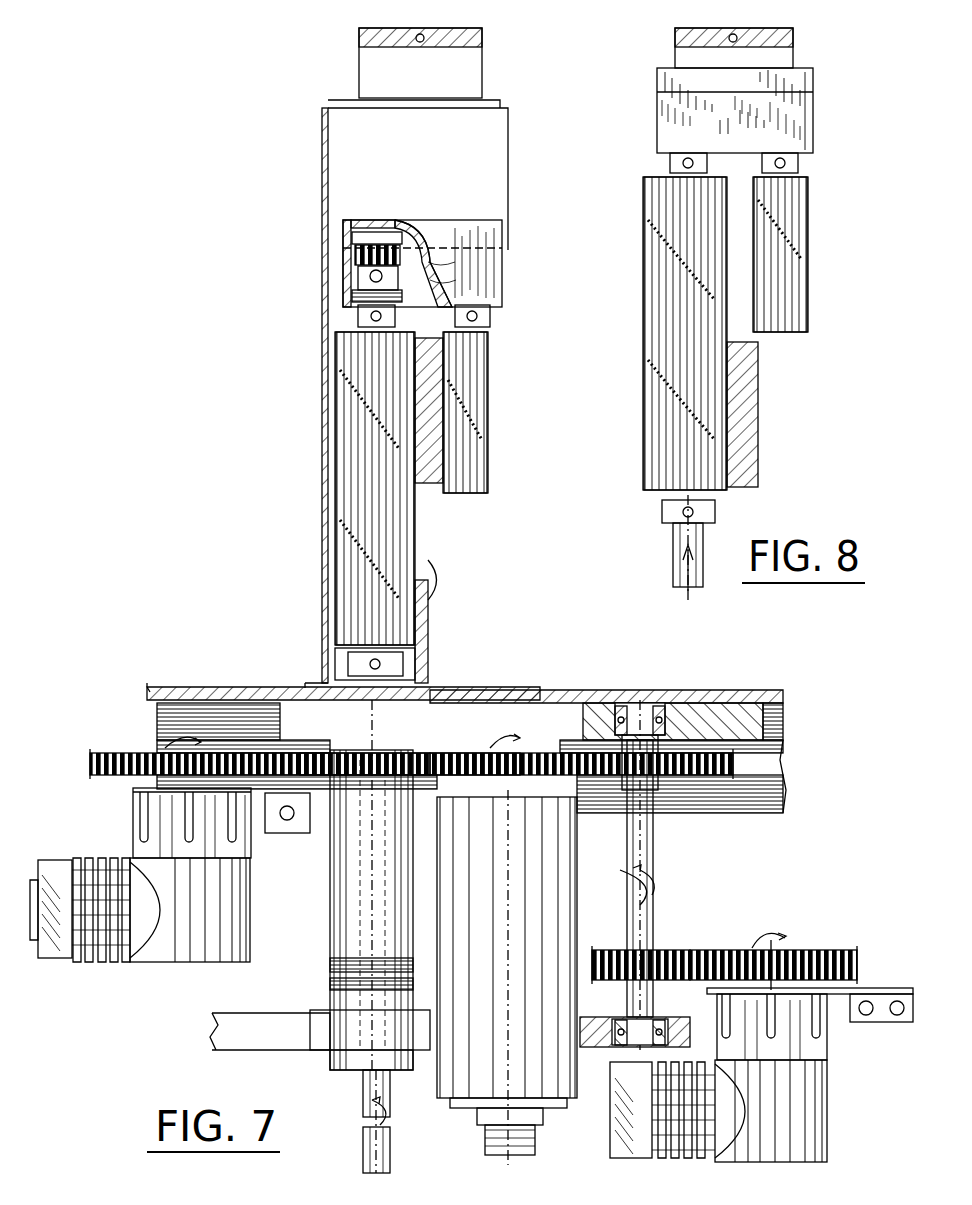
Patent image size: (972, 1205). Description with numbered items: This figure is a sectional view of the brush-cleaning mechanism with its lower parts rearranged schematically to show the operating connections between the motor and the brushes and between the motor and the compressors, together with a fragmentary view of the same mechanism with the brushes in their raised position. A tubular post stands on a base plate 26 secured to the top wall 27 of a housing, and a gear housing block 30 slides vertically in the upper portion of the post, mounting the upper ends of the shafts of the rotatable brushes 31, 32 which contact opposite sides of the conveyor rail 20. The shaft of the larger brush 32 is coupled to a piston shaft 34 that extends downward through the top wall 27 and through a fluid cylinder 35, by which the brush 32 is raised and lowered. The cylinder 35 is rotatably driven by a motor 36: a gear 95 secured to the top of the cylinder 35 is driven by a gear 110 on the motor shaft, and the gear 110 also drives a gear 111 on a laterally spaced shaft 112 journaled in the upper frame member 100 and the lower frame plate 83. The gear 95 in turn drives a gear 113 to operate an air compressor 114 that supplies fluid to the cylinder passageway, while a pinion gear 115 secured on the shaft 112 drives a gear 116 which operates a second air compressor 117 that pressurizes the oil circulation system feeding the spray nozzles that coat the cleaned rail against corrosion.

In FIG. 7, the conveyor rail 20 is at (430, 483).
In FIG. 8, the conveyor rail 20 is at (748, 395).
In FIG. 7, the base plate 26 is at (490, 688).
In FIG. 7, the top wall 27 is at (720, 690).
In FIG. 7, the gear housing block 30 is at (413, 232).
In FIG. 8, the gear housing block 30 is at (668, 132).
In FIG. 7, the rotatable brush 31 is at (470, 393).
In FIG. 8, the rotatable brush 31 is at (793, 212).
In FIG. 7, the rotatable brush 32 is at (365, 455).
In FIG. 8, the rotatable brush 32 is at (660, 272).
In FIG. 7, the piston shaft 34 is at (368, 1085).
In FIG. 7, the fluid cylinder 35 is at (353, 878).
In FIG. 7, the motor 36 is at (496, 963).
In FIG. 7, the lower frame plate 83 is at (235, 1032).
In FIG. 7, the gear 95 is at (428, 760).
In FIG. 7, the upper frame member 100 is at (780, 734).
In FIG. 7, the gear 110 is at (512, 760).
In FIG. 7, the gear 111 is at (710, 780).
In FIG. 7, the shaft 112 is at (645, 905).
In FIG. 7, the gear 113 is at (128, 752).
In FIG. 7, the air compressor 114 is at (180, 945).
In FIG. 7, the pinion gear 115 is at (660, 950).
In FIG. 7, the gear 116 is at (820, 950).
In FIG. 7, the air compressor 117 is at (812, 1110).